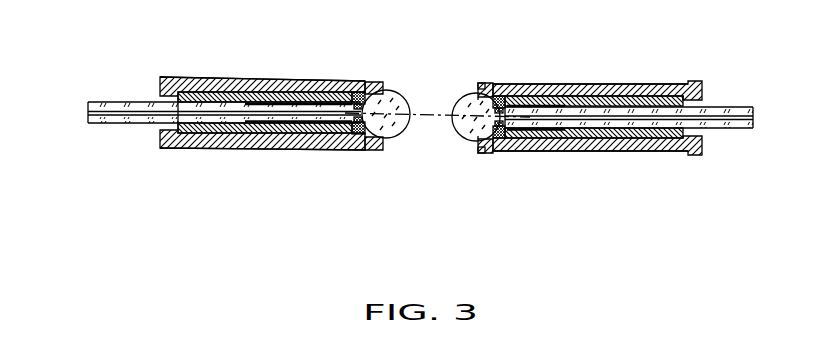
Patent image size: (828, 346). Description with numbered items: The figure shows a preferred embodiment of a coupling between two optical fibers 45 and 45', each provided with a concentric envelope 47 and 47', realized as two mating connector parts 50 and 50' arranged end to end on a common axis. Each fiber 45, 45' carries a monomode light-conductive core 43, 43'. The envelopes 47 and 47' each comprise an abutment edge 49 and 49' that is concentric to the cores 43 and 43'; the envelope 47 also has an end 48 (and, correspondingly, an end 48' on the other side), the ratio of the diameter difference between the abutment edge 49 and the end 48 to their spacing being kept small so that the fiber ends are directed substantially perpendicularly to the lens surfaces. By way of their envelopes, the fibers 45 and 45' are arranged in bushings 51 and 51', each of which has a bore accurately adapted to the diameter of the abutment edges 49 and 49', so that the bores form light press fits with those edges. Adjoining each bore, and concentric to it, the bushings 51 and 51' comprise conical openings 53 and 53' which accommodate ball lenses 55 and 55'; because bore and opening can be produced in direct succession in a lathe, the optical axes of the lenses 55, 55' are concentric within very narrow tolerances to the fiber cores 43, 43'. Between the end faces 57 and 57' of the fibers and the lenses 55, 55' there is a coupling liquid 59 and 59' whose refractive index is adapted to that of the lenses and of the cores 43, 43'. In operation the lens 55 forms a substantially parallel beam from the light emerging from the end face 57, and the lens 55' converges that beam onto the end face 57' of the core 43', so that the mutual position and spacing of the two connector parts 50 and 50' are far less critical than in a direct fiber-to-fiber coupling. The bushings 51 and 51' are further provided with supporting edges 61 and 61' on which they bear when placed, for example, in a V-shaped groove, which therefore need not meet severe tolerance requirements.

The connector part 50 is at (590, 163).
The connector part 50' is at (262, 159).
The light-conductive core 43 is at (631, 157).
The light-conductive core 43' is at (224, 80).
The fiber 45 is at (629, 152).
The fiber 45' is at (224, 84).
The envelope 47 is at (601, 100).
The envelope 47' is at (262, 142).
The end of the envelope 48 is at (721, 92).
The bore of sleeve 48' is at (138, 139).
The abutment edge 49 is at (536, 87).
The abutment edge 49' is at (298, 157).
The bushing 51 is at (594, 91).
The bushing 51' is at (265, 151).
The conical opening 53 is at (474, 102).
The conical opening 53' is at (394, 146).
The ball lens 55 is at (471, 151).
The ball lens 55' is at (400, 93).
The end face 57 is at (536, 144).
The end face 57' is at (327, 91).
The coupling liquid 59 is at (506, 85).
The coupling liquid 59' is at (368, 157).
The supporting edge 61 is at (586, 153).
The supporting edge 61' is at (266, 74).